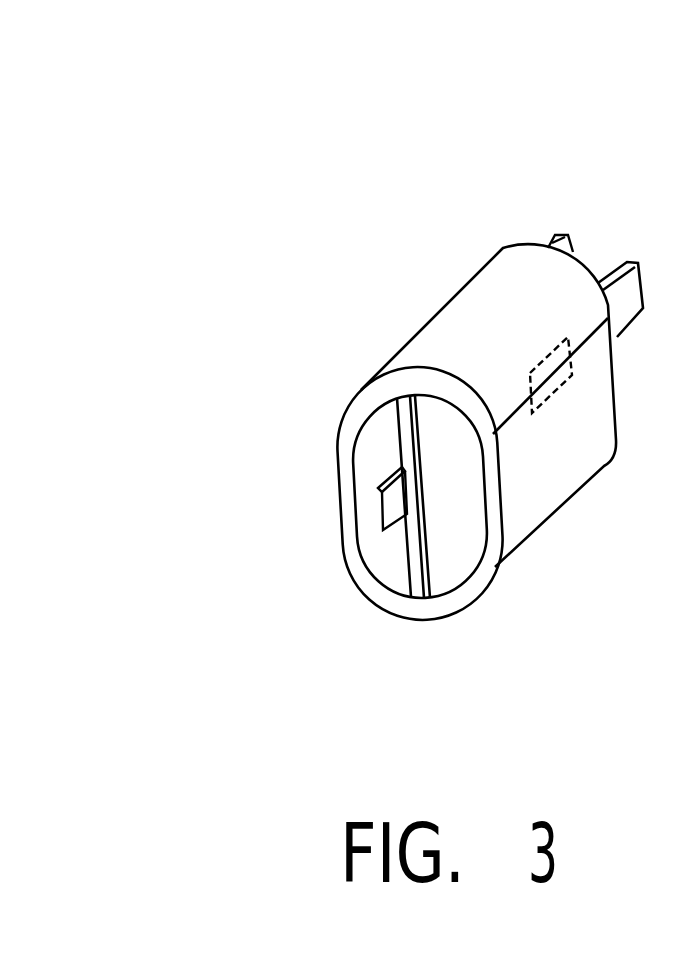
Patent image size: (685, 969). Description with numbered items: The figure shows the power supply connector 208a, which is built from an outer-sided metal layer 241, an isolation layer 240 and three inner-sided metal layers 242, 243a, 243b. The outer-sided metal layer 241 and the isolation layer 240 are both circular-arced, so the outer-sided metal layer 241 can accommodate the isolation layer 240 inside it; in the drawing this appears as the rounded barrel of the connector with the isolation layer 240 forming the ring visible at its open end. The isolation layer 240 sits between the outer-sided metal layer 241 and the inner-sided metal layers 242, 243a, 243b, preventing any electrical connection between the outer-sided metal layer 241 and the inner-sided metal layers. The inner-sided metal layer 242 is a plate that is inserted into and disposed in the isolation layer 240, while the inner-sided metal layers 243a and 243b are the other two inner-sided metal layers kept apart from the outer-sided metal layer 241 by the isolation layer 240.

The power supply connector 208a is at (137, 76).
The isolation layer 240 is at (352, 420).
The outer-sided metal layer 241 is at (432, 319).
The inner-sided metal layer 242 is at (553, 236).
The inner-sided metal layer 243a is at (378, 508).
The inner-sided metal layer 243b is at (548, 402).